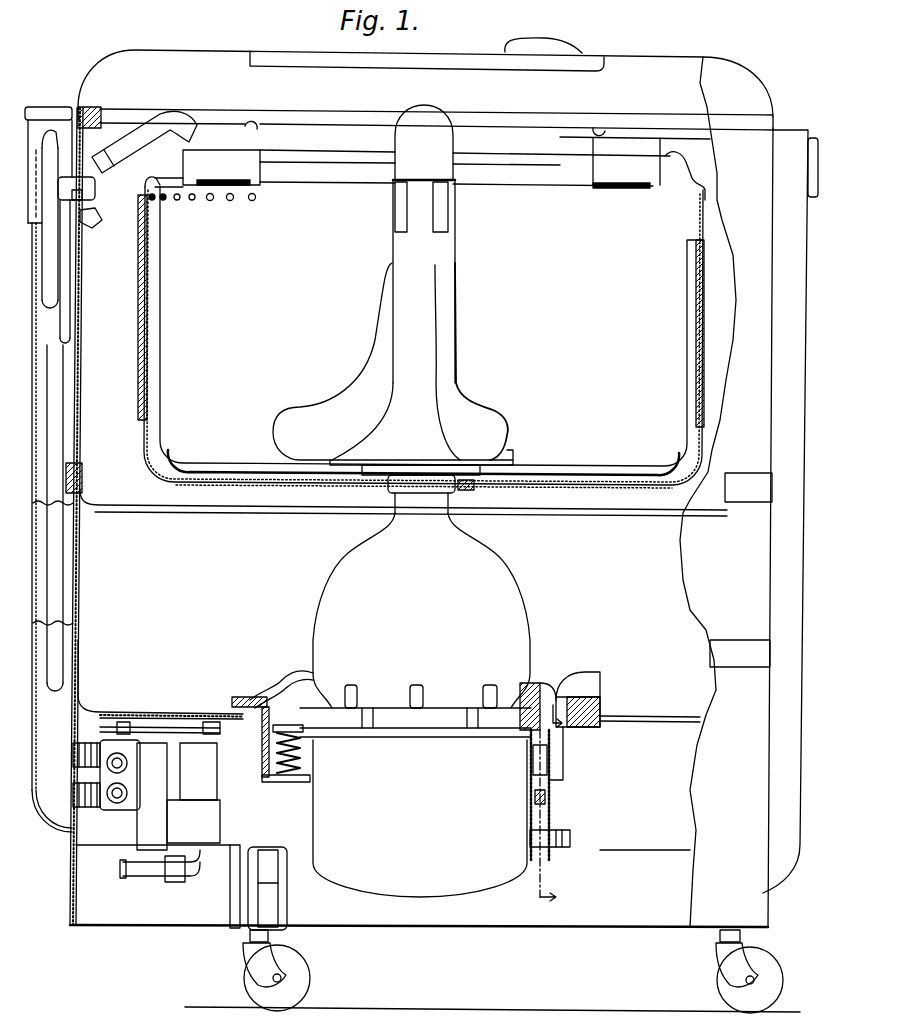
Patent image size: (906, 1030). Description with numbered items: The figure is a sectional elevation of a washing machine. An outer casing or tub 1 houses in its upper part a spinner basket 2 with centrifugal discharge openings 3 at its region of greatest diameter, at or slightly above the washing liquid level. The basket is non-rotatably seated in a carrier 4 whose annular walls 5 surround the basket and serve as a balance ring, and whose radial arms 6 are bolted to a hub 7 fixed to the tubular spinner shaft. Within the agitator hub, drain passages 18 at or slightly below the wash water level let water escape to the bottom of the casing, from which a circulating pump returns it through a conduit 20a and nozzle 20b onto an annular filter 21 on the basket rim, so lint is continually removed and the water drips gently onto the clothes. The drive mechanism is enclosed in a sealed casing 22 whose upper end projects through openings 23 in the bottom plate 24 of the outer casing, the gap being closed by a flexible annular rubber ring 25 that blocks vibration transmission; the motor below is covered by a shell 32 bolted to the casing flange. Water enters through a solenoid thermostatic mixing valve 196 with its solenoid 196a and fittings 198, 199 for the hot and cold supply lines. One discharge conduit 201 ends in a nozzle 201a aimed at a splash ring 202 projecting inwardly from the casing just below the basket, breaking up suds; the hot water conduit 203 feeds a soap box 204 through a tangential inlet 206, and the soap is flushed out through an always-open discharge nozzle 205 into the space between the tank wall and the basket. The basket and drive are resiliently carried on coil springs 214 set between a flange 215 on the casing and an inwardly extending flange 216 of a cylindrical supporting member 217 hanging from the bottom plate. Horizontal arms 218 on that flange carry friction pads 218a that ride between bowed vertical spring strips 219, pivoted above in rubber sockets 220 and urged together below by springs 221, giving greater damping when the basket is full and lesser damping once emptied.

The outer casing 1 is at (77, 557).
The spinner basket 2 is at (143, 283).
The centrifugal discharge openings 3 is at (250, 200).
The carrier 4 is at (157, 470).
The annular walls 5 is at (140, 378).
The radial arms 6 is at (573, 489).
The hub 7 is at (466, 493).
The drain passages 18 is at (432, 223).
The conduit 20a is at (55, 447).
The nozzle 20b is at (170, 118).
The annular filter 21 is at (230, 150).
The sealed casing 22 is at (314, 603).
The openings 23 is at (262, 730).
The bottom plate 24 is at (182, 712).
The flexible annular rubber ring 25 is at (287, 672).
The shell 32 is at (313, 820).
The solenoid thermostatic mixing valve 196 is at (213, 832).
The solenoid 196a is at (193, 793).
The fitting 198 is at (83, 743).
The fitting 199 is at (72, 800).
The discharge conduit 201 is at (70, 325).
The nozzle 201a is at (92, 187).
The splash ring 202 is at (135, 513).
The discharge conduit 203 is at (47, 267).
The soap box 204 is at (53, 127).
The discharge nozzle 205 is at (94, 217).
The tangential inlet 206 is at (35, 107).
The coil springs 214 is at (303, 763).
The flange 215 is at (260, 697).
The inwardly extending flange 216 is at (278, 782).
The cylindrical supporting member 217 is at (263, 765).
The horizontal arms 218 is at (531, 793).
The friction pads 218a is at (550, 797).
The spring strips 219 is at (536, 820).
The rubber sockets 220 is at (522, 740).
The springs 221 is at (555, 843).